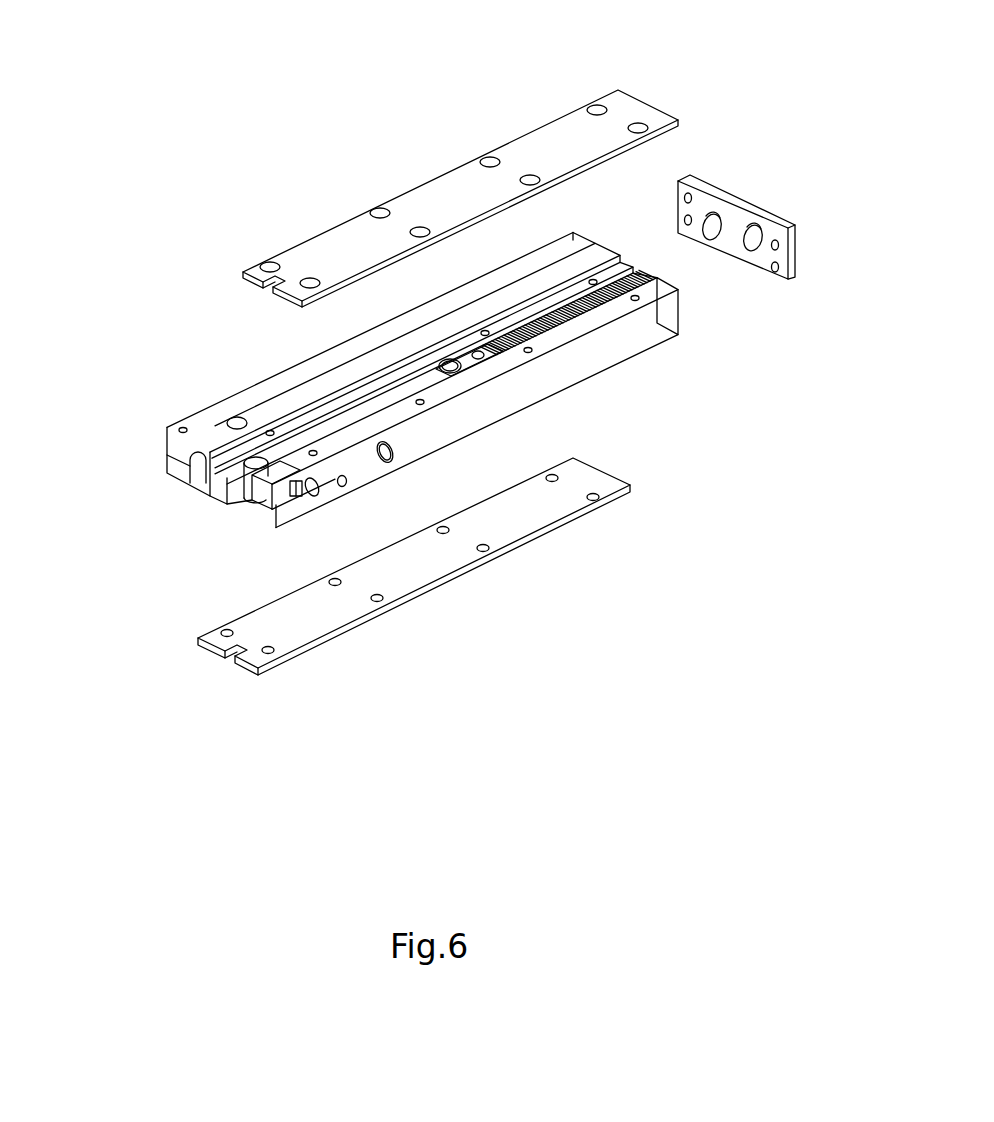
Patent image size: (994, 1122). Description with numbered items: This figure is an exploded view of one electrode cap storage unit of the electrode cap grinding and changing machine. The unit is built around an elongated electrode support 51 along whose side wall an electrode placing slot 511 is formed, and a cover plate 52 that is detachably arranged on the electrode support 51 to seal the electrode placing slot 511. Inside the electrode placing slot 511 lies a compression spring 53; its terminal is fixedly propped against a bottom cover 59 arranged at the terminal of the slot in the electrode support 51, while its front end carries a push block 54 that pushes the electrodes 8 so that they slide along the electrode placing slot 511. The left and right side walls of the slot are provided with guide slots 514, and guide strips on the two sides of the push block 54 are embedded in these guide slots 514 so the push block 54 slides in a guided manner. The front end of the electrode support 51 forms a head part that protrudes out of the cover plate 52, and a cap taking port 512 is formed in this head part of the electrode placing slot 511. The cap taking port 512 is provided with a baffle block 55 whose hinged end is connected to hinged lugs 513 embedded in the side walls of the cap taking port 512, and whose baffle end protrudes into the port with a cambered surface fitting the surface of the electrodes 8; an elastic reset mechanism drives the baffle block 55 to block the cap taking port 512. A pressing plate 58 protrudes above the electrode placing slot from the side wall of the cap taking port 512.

The electrode 8 is at (449, 372).
The electrode support 51 is at (652, 327).
The cover plate 52 is at (443, 197).
The compression spring 53 is at (577, 313).
The push block 54 is at (484, 358).
The baffle block 55 is at (190, 462).
The pressing plate 58 is at (275, 515).
The bottom cover 59 is at (730, 227).
The electrode placing slot 511 is at (353, 420).
The cap taking port 512 is at (228, 500).
The hinged lug 513 is at (178, 445).
The guide slot 514 is at (301, 485).